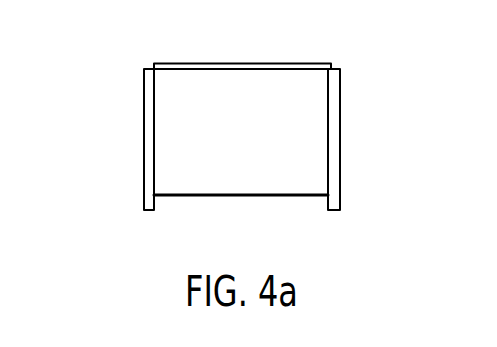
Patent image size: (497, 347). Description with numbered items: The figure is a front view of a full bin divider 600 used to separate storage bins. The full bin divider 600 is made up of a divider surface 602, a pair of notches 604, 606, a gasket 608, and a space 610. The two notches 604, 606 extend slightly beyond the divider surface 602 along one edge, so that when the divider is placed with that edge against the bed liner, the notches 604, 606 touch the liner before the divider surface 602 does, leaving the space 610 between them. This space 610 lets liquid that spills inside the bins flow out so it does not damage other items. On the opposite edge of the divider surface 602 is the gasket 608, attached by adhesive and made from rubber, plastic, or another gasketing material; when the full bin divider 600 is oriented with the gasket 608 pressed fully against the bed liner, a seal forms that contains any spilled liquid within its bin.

The full bin divider 600 is at (223, 133).
The divider surface 602 is at (182, 98).
The notch 604 is at (341, 182).
The notch 606 is at (147, 172).
The gasket 608 is at (184, 62).
The space 610 is at (307, 204).